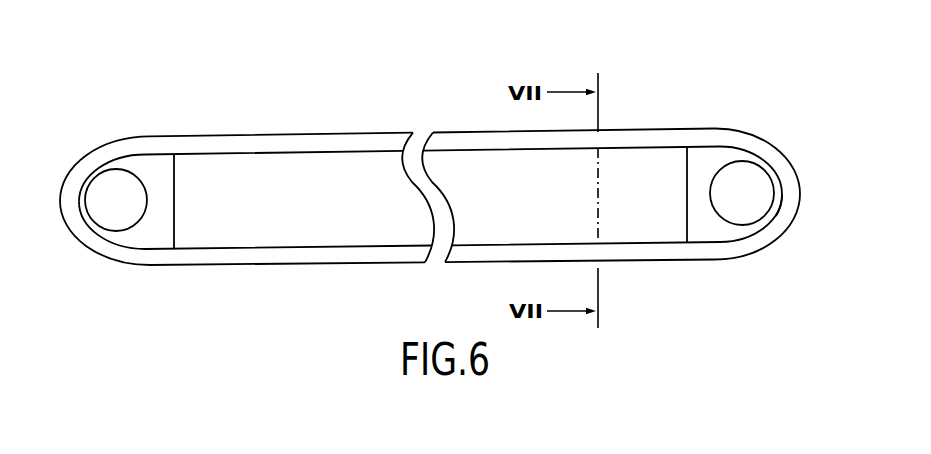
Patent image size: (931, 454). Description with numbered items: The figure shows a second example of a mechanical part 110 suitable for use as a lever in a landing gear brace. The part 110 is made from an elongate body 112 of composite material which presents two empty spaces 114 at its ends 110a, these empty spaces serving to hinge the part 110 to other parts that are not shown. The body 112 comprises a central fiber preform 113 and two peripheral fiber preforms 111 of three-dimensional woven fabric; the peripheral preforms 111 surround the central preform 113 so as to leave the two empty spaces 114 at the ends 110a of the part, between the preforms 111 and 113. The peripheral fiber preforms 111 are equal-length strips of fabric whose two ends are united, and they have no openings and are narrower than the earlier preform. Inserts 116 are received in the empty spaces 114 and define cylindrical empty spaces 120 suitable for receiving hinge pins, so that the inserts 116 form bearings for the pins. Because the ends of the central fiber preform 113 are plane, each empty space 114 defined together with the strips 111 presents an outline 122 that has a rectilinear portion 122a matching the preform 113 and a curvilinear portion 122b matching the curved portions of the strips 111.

The mechanical part 110 is at (278, 84).
The ends 110a is at (56, 166).
The peripheral fiber preforms 111 is at (355, 142).
The elongate body 112 is at (292, 232).
The central fiber preform 113 is at (284, 201).
The empty spaces 114 is at (129, 146).
The inserts 116 is at (153, 237).
The cylindrical empty spaces 120 is at (104, 216).
The outlines 122 is at (740, 152).
The rectilinear portion 122a is at (685, 170).
The curvilinear portion 122b is at (777, 214).